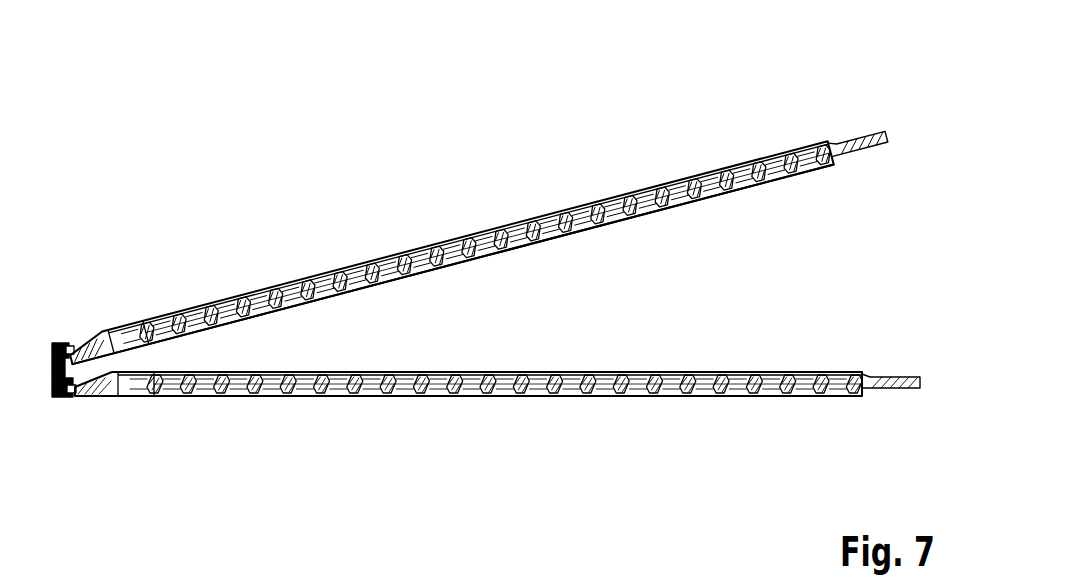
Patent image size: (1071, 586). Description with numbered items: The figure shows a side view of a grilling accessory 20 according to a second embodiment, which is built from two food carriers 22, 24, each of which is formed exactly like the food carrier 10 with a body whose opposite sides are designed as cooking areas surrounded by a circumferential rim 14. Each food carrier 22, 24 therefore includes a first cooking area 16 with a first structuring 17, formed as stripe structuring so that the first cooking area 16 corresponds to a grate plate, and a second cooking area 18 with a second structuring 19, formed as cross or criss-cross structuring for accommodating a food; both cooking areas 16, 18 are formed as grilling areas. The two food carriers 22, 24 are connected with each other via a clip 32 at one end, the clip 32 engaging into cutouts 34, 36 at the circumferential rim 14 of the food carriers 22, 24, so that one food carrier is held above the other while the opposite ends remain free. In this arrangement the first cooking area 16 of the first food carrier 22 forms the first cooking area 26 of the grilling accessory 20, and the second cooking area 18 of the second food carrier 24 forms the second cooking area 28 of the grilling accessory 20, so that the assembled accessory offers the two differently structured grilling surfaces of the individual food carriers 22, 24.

The food carrier 10 is at (493, 280).
The circumferential rim 14 is at (845, 148).
The first cooking area 16 is at (502, 224).
The first structuring 17 is at (562, 220).
The second cooking area 18 is at (506, 255).
The second structuring 19 is at (720, 185).
The grilling accessory 20 is at (213, 194).
The first food carrier 22 is at (468, 397).
The second food carrier 24 is at (463, 304).
The first cooking area of the grilling accessory 26 is at (602, 366).
The second cooking area of the grilling accessory 28 is at (629, 223).
The clip 32 is at (60, 342).
The cutout 34 is at (84, 393).
The cutout 36 is at (76, 340).